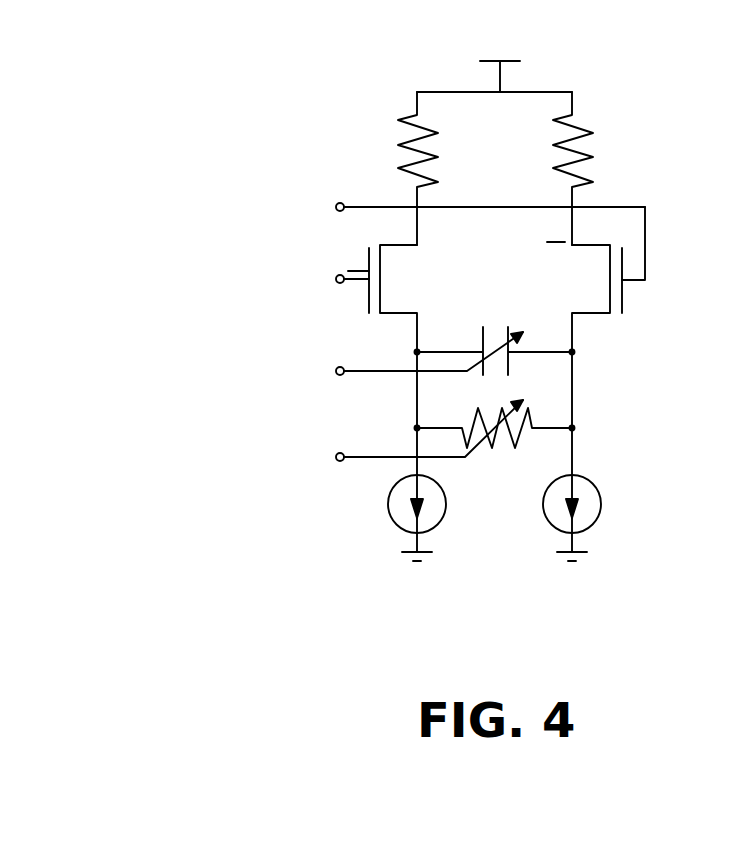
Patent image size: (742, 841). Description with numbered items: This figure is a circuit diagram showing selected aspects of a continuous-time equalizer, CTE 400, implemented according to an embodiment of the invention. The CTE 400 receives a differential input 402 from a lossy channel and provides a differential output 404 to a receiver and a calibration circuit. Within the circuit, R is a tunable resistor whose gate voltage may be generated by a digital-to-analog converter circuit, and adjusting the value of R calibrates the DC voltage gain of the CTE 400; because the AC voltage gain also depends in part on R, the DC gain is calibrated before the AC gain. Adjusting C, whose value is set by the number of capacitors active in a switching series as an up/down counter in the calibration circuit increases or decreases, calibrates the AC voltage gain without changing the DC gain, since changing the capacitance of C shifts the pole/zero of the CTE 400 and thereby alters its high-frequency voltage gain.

The continuous-time equalizer 400 is at (448, 364).
The differential input 402 is at (282, 245).
The differential output 404 is at (512, 215).